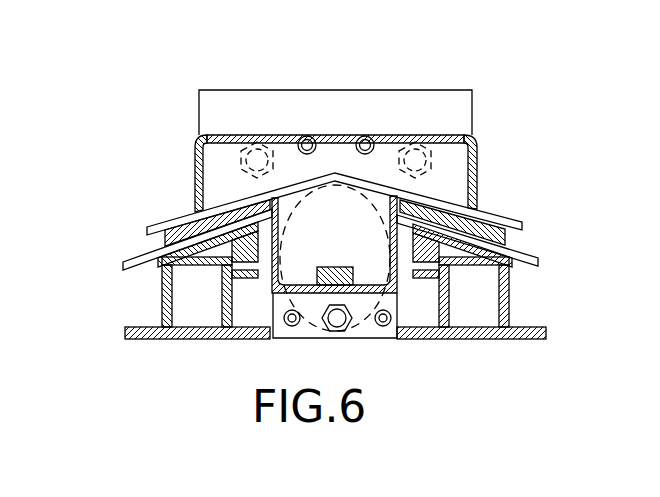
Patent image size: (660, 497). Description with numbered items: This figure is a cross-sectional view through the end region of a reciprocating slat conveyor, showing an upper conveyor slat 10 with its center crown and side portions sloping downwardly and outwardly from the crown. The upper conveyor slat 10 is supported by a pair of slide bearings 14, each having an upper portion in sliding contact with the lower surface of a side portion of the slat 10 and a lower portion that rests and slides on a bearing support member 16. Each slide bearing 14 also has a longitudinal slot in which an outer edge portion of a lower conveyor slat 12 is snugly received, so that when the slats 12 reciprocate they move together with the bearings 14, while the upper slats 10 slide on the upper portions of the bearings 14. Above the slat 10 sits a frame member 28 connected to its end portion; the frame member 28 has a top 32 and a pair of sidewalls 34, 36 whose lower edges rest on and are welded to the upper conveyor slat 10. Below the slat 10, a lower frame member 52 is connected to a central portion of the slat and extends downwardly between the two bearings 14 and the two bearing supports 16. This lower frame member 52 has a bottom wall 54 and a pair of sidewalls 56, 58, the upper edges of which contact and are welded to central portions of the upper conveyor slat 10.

The upper conveyor slat 10 is at (432, 197).
The lower conveyor slat 12 is at (128, 250).
The slide bearing 14 is at (280, 222).
The bearing support member 16 is at (203, 263).
The frame member 28 is at (312, 121).
The top 32 is at (397, 134).
The sidewall 34 is at (195, 172).
The sidewall 36 is at (477, 150).
The lower frame member 52 is at (312, 296).
The bottom wall 54 is at (274, 300).
The sidewall 56 is at (268, 218).
The sidewall 58 is at (405, 225).